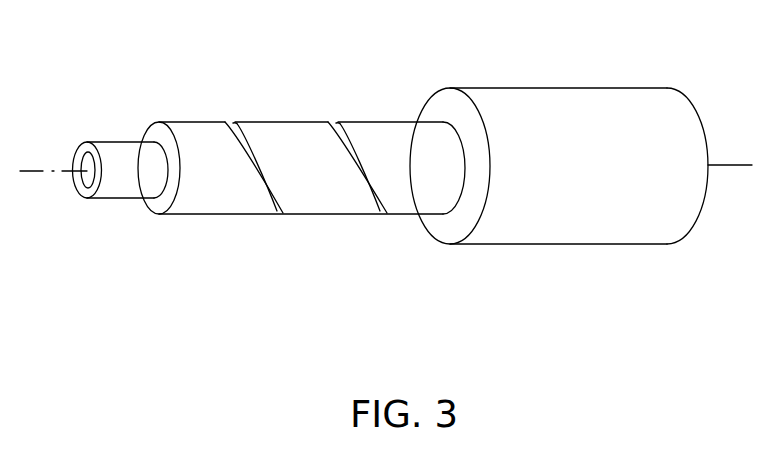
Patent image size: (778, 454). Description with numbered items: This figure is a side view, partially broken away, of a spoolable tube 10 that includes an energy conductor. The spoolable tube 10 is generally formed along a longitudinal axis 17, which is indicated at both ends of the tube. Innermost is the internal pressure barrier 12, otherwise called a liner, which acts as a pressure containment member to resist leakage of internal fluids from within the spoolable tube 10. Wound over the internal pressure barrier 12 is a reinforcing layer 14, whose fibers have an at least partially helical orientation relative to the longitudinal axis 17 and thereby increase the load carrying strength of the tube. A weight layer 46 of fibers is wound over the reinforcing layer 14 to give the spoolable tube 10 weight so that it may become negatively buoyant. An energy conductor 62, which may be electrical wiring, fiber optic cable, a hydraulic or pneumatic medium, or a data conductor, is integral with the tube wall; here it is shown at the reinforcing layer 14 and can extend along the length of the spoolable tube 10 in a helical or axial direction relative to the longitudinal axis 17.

The spoolable tube 10 is at (223, 63).
The internal pressure barrier 12 is at (140, 177).
The reinforcing layer 14 is at (322, 177).
The longitudinal axis 17 is at (40, 170).
The weight layer 46 is at (612, 174).
The energy conductor 62 is at (360, 165).